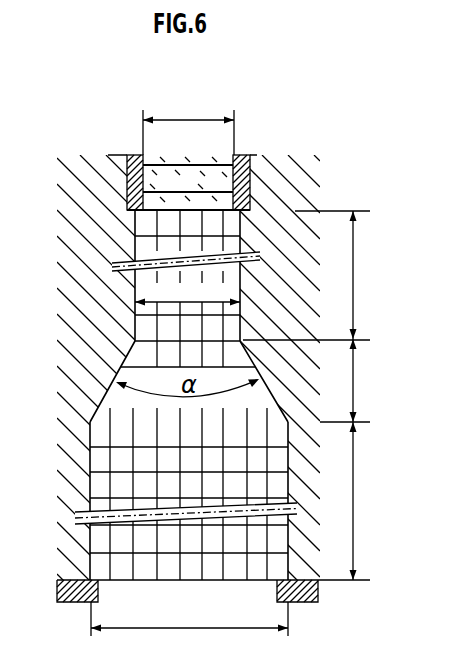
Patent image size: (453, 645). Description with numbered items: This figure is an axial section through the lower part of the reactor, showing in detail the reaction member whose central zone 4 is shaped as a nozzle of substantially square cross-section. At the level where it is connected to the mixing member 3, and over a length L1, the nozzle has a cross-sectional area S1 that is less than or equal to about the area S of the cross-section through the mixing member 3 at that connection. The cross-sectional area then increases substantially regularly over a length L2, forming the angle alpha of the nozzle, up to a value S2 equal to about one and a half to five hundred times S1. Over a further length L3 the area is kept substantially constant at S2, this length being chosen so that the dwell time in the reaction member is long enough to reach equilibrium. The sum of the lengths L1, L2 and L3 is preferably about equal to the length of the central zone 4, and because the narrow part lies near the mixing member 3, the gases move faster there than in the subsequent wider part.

The mixing member 3 is at (239, 151).
The central zone 4 is at (100, 390).
The cross-sectional area of the mixing member S is at (188, 122).
The cross-sectional area of the nozzle near the mixing member S1 is at (187, 289).
The cross-sectional area of the nozzle near the discharging member S2 is at (189, 616).
The length of the narrow nozzle section L1 is at (311, 275).
The length of the widening nozzle section L2 is at (352, 380).
The length of the constant wide nozzle section L3 is at (367, 501).